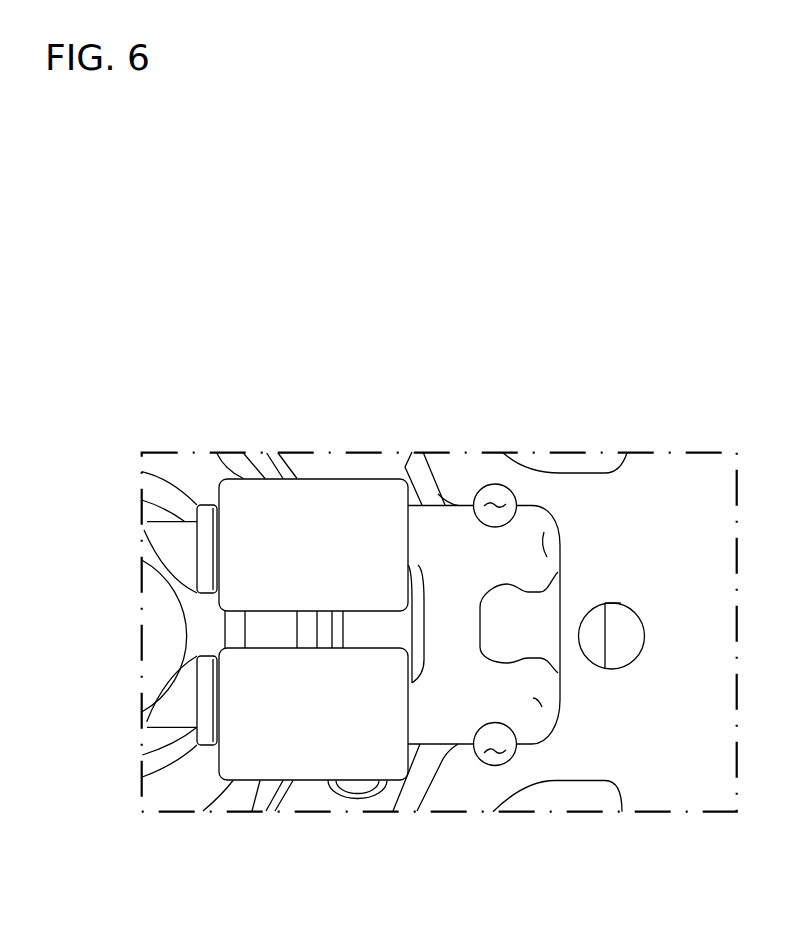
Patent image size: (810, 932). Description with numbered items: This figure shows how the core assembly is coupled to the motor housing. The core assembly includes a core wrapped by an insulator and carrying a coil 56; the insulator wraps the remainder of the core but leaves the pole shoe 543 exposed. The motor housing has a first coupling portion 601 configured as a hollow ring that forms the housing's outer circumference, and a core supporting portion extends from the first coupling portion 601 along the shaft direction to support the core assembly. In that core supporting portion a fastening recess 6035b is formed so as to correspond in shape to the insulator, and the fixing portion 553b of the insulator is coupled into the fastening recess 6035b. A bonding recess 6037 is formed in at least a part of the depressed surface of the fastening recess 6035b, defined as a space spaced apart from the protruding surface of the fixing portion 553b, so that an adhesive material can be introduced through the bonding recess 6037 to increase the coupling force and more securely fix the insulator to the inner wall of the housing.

The pole shoe 543 is at (183, 535).
The coil 56 is at (327, 490).
The bonding recess 6037 is at (493, 498).
The fastening recess 6035b is at (548, 545).
The first coupling portion 601 is at (700, 500).
The fixing portion 553b is at (533, 700).